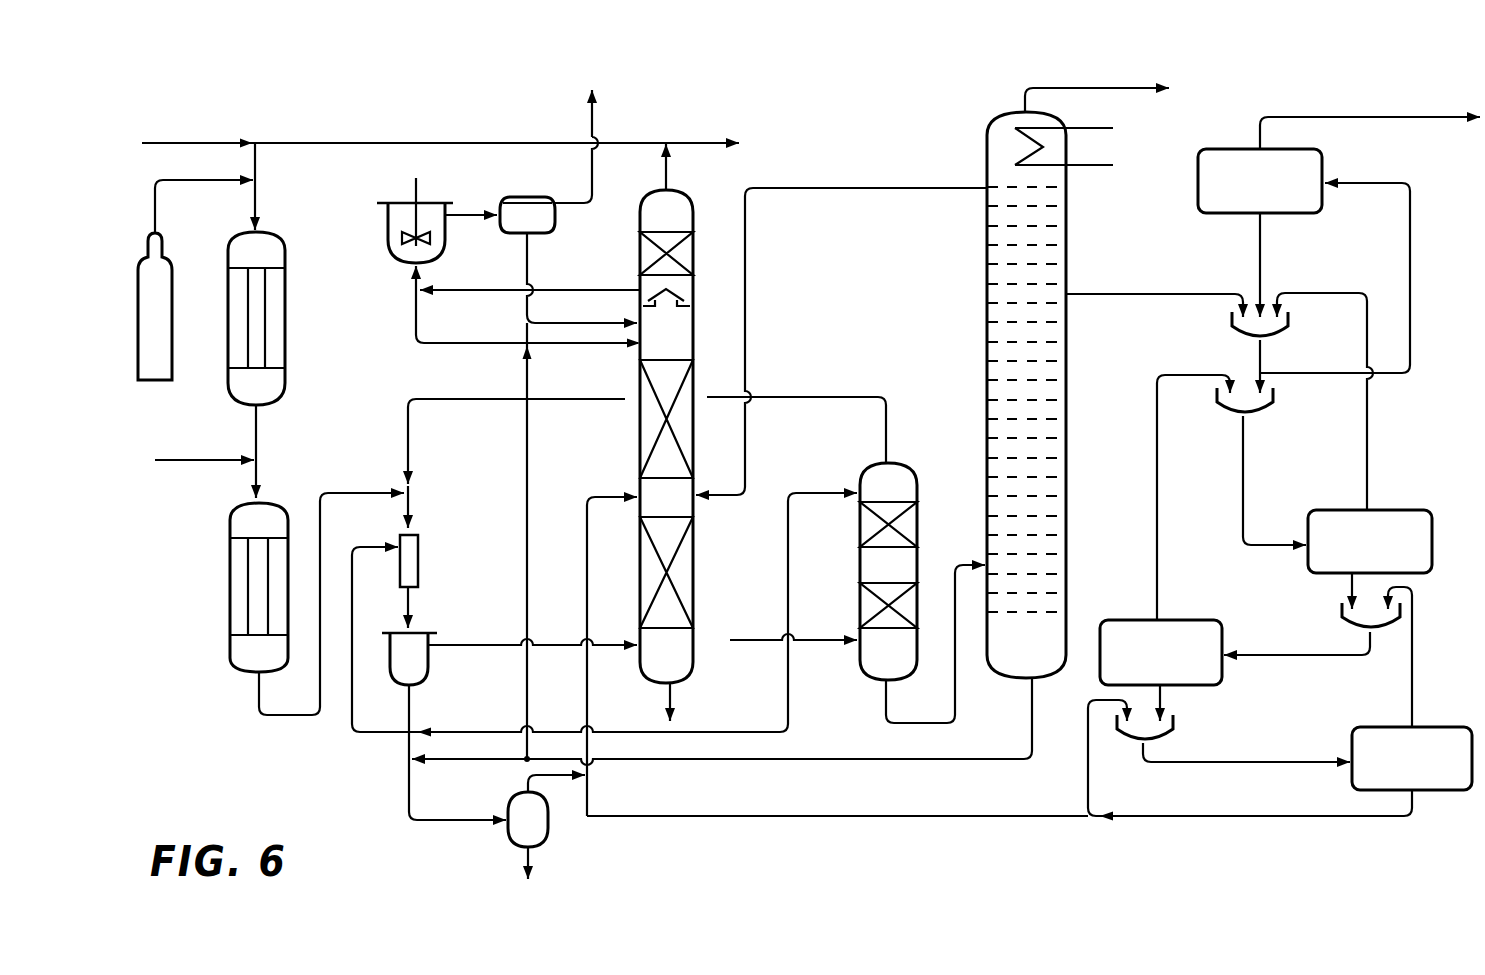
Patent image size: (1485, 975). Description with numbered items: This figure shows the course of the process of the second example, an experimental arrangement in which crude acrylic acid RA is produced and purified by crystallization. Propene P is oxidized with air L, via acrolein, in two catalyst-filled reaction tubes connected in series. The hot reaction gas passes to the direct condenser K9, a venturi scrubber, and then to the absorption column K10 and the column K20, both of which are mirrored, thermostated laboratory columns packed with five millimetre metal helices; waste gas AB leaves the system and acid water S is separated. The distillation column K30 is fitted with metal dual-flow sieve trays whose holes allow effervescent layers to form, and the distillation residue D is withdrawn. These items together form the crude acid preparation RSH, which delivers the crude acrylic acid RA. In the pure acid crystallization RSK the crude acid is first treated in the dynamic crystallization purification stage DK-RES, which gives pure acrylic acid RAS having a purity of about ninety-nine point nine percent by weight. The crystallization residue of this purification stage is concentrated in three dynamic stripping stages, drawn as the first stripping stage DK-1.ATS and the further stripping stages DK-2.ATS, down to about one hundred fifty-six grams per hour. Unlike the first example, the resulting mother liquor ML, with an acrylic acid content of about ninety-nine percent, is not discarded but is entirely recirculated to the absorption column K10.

The air L is at (396, 303).
The propene P is at (163, 331).
The direct condenser K9 is at (488, 513).
The absorption column K10 is at (656, 455).
The column K20 is at (846, 560).
The distillation column K30 is at (1078, 402).
The acid water S is at (576, 134).
The waste gas AB is at (713, 143).
The distillation residue D is at (546, 847).
The mother liquor ML is at (837, 795).
The crude acid preparation RSH is at (755, 834).
The pure acid crystallization RSK is at (1250, 774).
The crude acrylic acid RA is at (1154, 287).
The pure acrylic acid RAS is at (1370, 113).
The dynamic crystallization purification stage DK-RES is at (1280, 207).
The first dynamic stripping stage DK-1.ATS is at (1396, 568).
The second dynamic stripping stage DK-2.ATS is at (1438, 785).